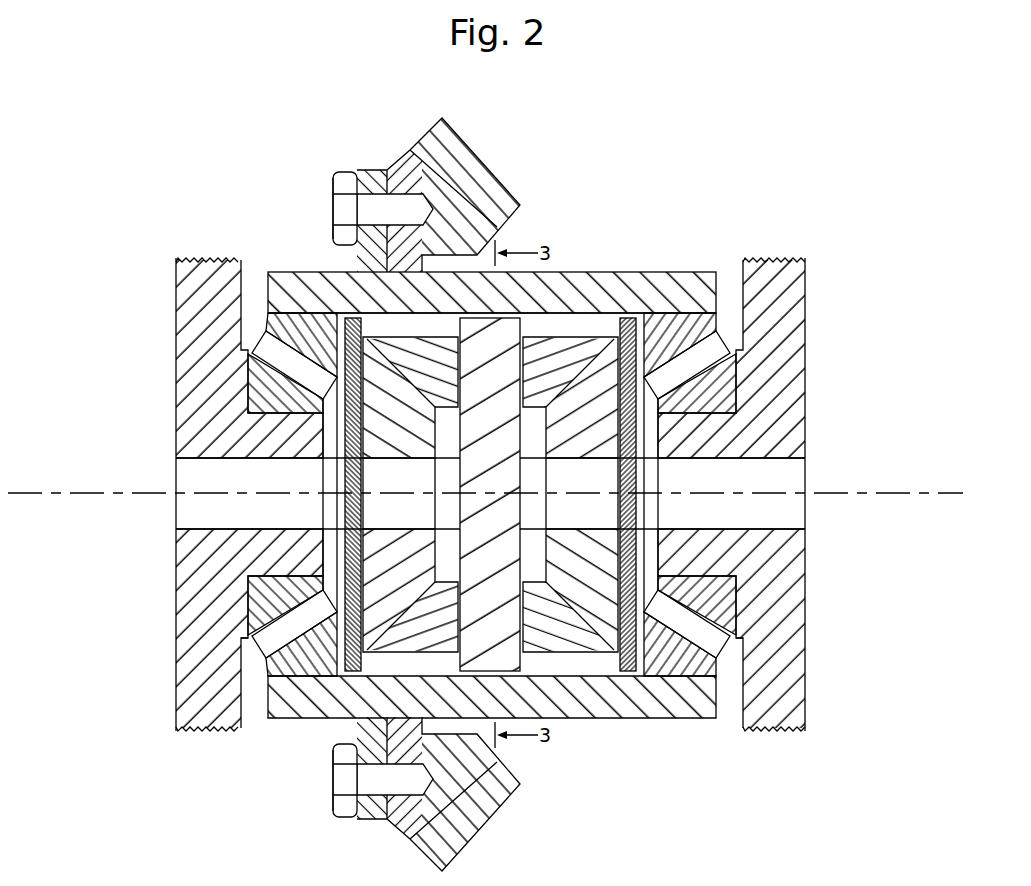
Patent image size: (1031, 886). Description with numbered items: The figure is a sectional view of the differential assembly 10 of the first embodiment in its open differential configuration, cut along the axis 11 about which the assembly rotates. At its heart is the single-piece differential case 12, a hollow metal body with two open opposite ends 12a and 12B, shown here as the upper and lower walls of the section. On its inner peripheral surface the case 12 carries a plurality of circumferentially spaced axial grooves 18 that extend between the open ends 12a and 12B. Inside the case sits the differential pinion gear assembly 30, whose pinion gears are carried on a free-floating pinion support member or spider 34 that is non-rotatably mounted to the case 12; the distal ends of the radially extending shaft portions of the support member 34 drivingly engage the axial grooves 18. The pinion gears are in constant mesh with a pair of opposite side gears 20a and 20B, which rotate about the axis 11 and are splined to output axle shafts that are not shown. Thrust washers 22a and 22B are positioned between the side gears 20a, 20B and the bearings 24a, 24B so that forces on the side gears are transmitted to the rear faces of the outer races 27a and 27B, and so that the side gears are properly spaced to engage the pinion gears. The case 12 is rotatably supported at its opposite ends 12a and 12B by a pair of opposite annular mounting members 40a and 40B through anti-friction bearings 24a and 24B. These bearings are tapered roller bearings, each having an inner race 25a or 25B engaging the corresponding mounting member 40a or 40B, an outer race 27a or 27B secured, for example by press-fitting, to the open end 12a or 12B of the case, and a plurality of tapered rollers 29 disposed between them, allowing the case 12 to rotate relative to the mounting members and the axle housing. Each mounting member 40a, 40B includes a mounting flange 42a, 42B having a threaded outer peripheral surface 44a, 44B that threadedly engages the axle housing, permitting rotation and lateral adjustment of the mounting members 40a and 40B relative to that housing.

The differential assembly 10 is at (311, 140).
The axis 11 is at (974, 492).
The differential case 12 is at (611, 264).
The open end of differential case 12a is at (280, 706).
The open end of differential case 12B is at (690, 713).
The axial grooves 18 is at (348, 320).
The side gear 20a is at (377, 437).
The side gear 20B is at (568, 437).
The thrust washer 22a is at (338, 460).
The thrust washer 22B is at (643, 452).
The anti-friction bearing 24a is at (251, 668).
The anti-friction bearing 24B is at (730, 668).
The inner race 25a is at (250, 414).
The inner race 25B is at (732, 414).
The outer race 27a is at (284, 318).
The outer race 27B is at (700, 330).
The tapered rollers 29 is at (260, 348).
The differential pinion gear assembly 30 is at (577, 316).
The pinion support member 34 is at (455, 463).
The mounting member 40a is at (160, 629).
The mounting member 40B is at (818, 637).
The mounting flange 42a is at (197, 336).
The mounting flange 42B is at (798, 311).
The threaded outer peripheral surface 44a is at (207, 258).
The threaded outer peripheral surface 44B is at (780, 258).